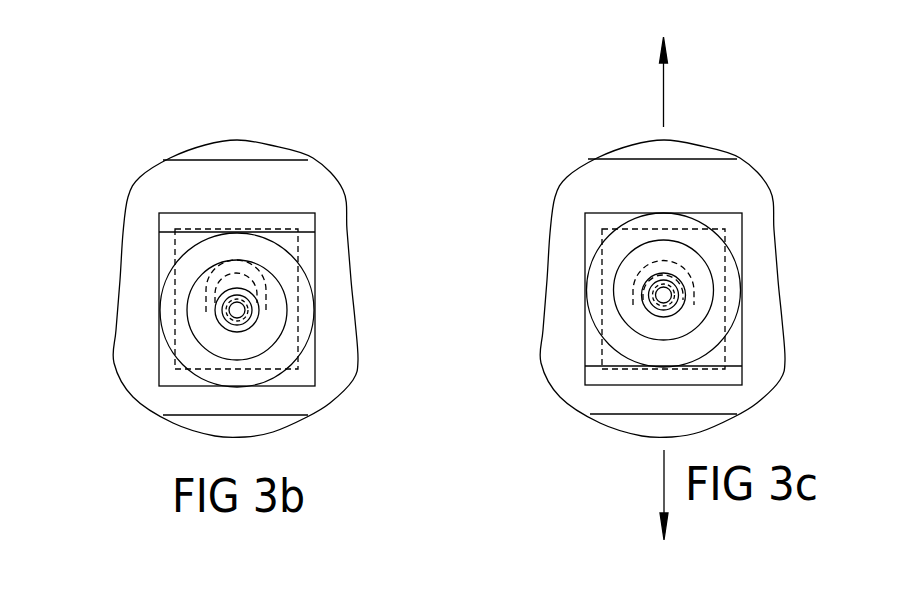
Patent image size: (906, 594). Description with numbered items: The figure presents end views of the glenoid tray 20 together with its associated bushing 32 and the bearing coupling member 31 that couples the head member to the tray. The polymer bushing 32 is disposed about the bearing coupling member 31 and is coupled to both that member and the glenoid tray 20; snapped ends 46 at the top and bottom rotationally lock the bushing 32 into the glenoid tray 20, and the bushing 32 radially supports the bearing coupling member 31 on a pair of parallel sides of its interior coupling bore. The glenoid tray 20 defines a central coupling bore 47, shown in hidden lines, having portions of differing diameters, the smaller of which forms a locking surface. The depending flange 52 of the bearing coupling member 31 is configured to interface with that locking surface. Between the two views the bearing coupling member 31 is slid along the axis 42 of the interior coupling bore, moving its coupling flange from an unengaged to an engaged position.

In FIG. 3B, the glenoid tray 20 is at (207, 153).
In FIG. 3C, the glenoid tray 20 is at (634, 153).
In FIG. 3B, the bearing coupling member 31 is at (168, 267).
In FIG. 3C, the bearing coupling member 31 is at (735, 255).
In FIG. 3B, the bushing 32 is at (117, 337).
In FIG. 3C, the bushing 32 is at (765, 353).
In FIG. 3C, the axis 42 is at (683, 288).
In FIG. 3B, the snapped ends 46 is at (258, 153).
In FIG. 3C, the snapped ends 46 is at (687, 155).
In FIG. 3B, the central coupling bore 47 is at (265, 276).
In FIG. 3C, the central coupling bore 47 is at (637, 270).
In FIG. 3B, the depending flange 52 is at (265, 287).
In FIG. 3C, the depending flange 52 is at (637, 283).